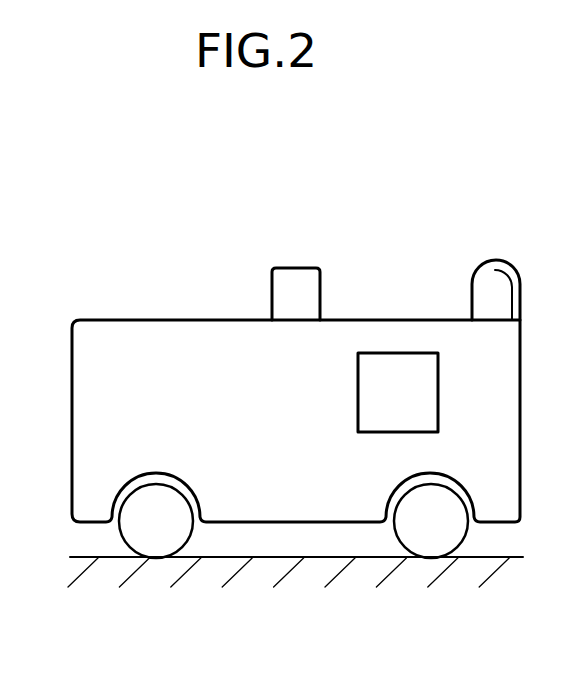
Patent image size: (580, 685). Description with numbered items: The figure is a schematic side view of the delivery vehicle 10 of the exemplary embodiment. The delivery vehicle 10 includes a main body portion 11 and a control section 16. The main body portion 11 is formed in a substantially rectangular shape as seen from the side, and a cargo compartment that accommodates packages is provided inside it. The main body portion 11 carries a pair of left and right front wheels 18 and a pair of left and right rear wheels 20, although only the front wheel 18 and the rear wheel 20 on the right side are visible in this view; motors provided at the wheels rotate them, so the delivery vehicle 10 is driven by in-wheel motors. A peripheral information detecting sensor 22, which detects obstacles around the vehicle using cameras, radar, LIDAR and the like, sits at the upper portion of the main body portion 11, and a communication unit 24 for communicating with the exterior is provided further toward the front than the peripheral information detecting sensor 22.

The delivery vehicle 10 is at (176, 205).
The main body portion 11 is at (107, 318).
The control section 16 is at (425, 352).
The front wheel 18 is at (458, 547).
The rear wheel 20 is at (182, 545).
The peripheral information detecting sensor 22 is at (292, 268).
The communication unit 24 is at (497, 260).